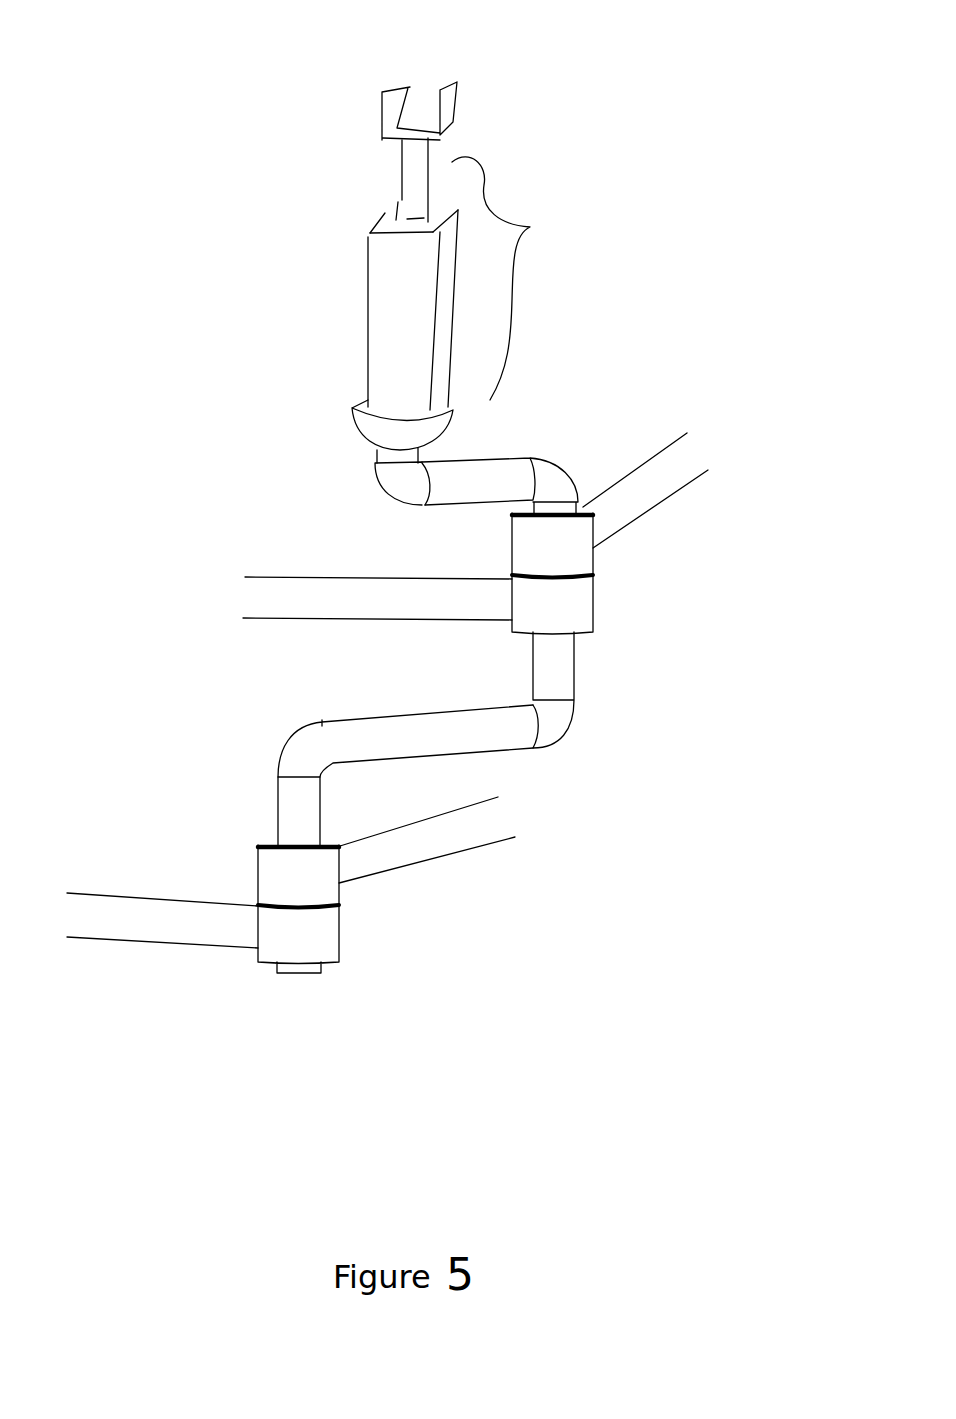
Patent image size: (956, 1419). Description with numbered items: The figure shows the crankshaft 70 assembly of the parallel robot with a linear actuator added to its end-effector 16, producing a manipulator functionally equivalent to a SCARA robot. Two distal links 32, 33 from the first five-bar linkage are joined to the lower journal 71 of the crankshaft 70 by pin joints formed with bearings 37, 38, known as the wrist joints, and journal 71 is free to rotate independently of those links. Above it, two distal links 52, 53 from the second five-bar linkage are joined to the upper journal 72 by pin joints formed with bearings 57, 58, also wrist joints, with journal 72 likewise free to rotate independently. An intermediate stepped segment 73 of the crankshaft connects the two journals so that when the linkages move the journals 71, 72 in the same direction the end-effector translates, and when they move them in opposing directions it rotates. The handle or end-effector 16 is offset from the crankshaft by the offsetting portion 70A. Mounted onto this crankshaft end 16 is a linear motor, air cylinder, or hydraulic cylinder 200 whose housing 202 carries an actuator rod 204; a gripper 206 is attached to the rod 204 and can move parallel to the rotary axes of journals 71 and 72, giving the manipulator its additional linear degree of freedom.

The gripper 206 is at (475, 78).
The actuator rod 204 is at (399, 173).
The cylinder housing 202 is at (379, 265).
The linear actuator 200 is at (561, 219).
The end-effector 16 is at (468, 432).
The crankshaft 70 is at (253, 450).
The offsetting portion 70A is at (455, 488).
The distal link 53 is at (648, 492).
The distal link 52 is at (340, 593).
The bearing 57 is at (575, 552).
The bearing 58 is at (577, 605).
The journal 72 is at (555, 662).
The horizontal pipe segment 73 is at (455, 735).
The journal 71 is at (293, 820).
The distal link 33 is at (460, 838).
The distal link 32 is at (162, 933).
The bearing 37 is at (318, 883).
The bearing 38 is at (325, 938).